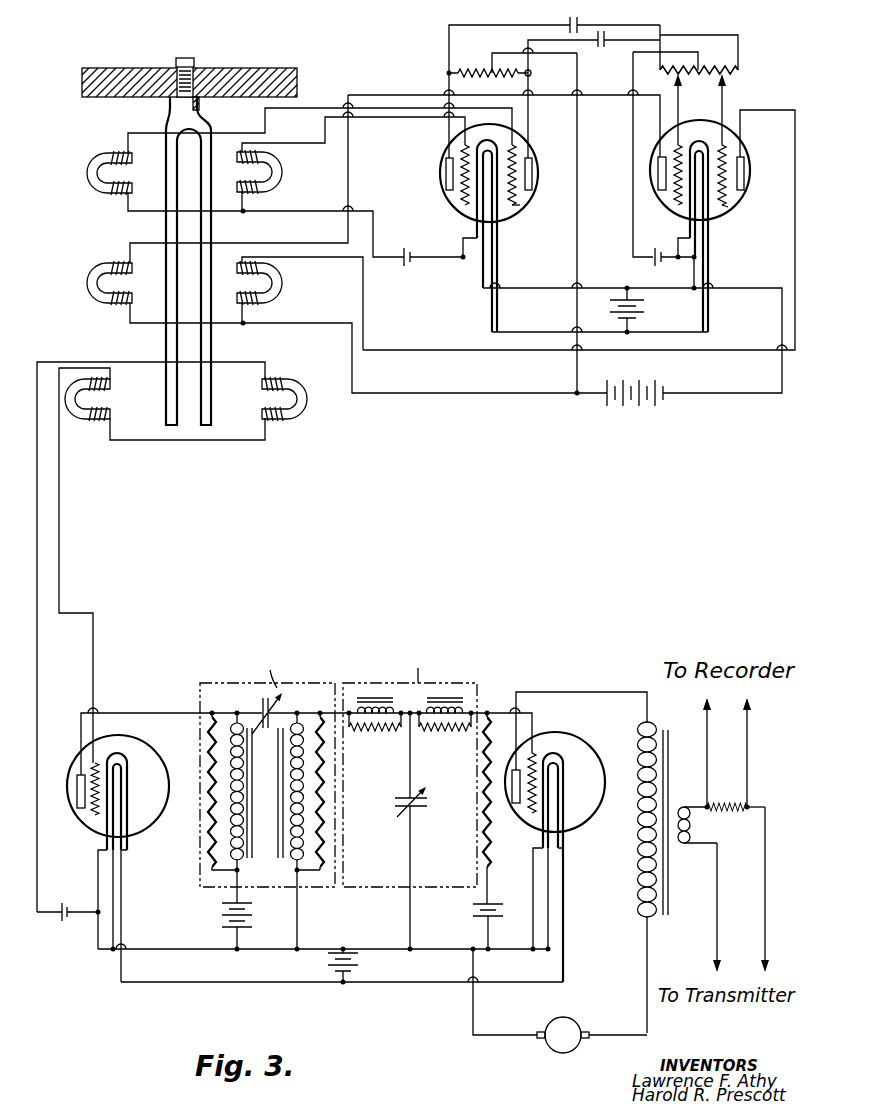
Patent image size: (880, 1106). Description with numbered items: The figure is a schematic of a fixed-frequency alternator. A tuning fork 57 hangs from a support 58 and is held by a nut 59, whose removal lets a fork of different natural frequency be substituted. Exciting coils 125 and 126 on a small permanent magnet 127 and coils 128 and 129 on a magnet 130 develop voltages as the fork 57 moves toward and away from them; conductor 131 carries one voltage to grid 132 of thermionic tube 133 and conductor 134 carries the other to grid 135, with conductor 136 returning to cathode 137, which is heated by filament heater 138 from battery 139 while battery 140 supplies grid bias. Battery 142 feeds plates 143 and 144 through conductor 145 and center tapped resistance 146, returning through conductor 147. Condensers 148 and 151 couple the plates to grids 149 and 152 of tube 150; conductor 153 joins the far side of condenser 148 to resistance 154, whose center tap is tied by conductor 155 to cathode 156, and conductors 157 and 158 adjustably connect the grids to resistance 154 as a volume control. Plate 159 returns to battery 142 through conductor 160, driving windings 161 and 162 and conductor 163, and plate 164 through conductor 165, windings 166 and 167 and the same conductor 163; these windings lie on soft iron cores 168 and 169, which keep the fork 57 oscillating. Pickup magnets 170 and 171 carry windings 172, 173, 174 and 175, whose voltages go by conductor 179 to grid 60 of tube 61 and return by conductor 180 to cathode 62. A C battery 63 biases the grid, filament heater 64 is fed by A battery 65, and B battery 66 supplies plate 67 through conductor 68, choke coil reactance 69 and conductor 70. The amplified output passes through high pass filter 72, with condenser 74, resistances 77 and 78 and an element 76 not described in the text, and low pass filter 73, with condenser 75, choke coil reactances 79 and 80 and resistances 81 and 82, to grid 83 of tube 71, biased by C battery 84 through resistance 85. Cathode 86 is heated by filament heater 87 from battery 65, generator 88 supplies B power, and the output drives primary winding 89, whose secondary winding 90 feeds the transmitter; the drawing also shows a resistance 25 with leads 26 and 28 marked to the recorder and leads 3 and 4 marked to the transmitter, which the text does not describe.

The lead to transmitter 3 is at (718, 910).
The lead to transmitter 4 is at (766, 902).
The potentiometer resistor 25 is at (717, 803).
The lead to recorder 26 is at (748, 763).
The lead to recorder 28 is at (707, 757).
The tuning fork 57 is at (212, 347).
The support 58 is at (247, 68).
The nut 59 is at (188, 62).
The grid 60 is at (97, 767).
The thermionic tube 61 is at (150, 752).
The cathode 62 is at (107, 826).
The C battery 63 is at (64, 926).
The filament heater 64 is at (128, 798).
The A battery 65 is at (370, 963).
The B battery 66 is at (253, 915).
The plate 67 is at (77, 800).
The conductor 68 is at (240, 873).
The choke coil reactance 69 is at (243, 813).
The conductor 70 is at (130, 713).
The thermionic tube 71 is at (577, 737).
The high pass filter 72 is at (304, 684).
The low pass filter 73 is at (472, 684).
The condenser 74 is at (283, 703).
The condenser 75 is at (427, 795).
The inductance 76 is at (323, 832).
The resistance 77 is at (208, 833).
The resistance 78 is at (304, 796).
The choke coil reactance 79 is at (373, 704).
The choke coil reactance 80 is at (445, 704).
The resistance 81 is at (374, 730).
The resistance 82 is at (435, 730).
The grid 83 is at (537, 760).
The C battery 84 is at (494, 908).
The resistance 85 is at (490, 850).
The cathode 86 is at (540, 817).
The filament heater 87 is at (562, 795).
The generator 88 is at (580, 1027).
The primary winding 89 is at (639, 872).
The secondary winding 90 is at (690, 827).
The coil 125 is at (117, 152).
The coil 126 is at (120, 196).
The permanent magnet 127 is at (98, 194).
The coil 128 is at (263, 157).
The coil 129 is at (265, 190).
The permanent magnet 130 is at (281, 172).
The conductor 131 is at (318, 107).
The grid 132 is at (520, 205).
The thermionic tube 133 is at (520, 154).
The conductor 134 is at (399, 117).
The grid 135 is at (466, 200).
The conductor 136 is at (306, 212).
The cathode 137 is at (473, 213).
The filament heater 138 is at (504, 215).
The battery 139 is at (645, 310).
The battery 140 is at (406, 270).
The battery 142 is at (666, 404).
The plate 143 is at (446, 180).
The plate 144 is at (533, 177).
The conductor 145 is at (578, 243).
The center tapped resistance 146 is at (463, 70).
The conductor 147 is at (740, 288).
The condenser 148 is at (579, 25).
The grid 149 is at (678, 148).
The thermionic tube 150 is at (740, 148).
The condenser 151 is at (602, 47).
The grid 152 is at (728, 203).
The conductor 153 is at (660, 25).
The resistance 154 is at (705, 70).
The conductor 155 is at (633, 157).
The cathode 156 is at (660, 248).
The conductor 157 is at (680, 100).
The conductor 158 is at (724, 100).
The plate 159 is at (662, 192).
The conductor 160 is at (238, 243).
The winding 161 is at (118, 263).
The winding 162 is at (128, 304).
The conductor 163 is at (473, 393).
The plate 164 is at (745, 172).
The conductor 165 is at (445, 350).
The winding 166 is at (262, 266).
The winding 167 is at (265, 302).
The soft iron electromagnet core 168 is at (96, 305).
The soft iron electromagnet core 169 is at (281, 283).
The permanent magnet 170 is at (80, 415).
The permanent magnet 171 is at (307, 400).
The winding 172 is at (113, 390).
The winding 173 is at (112, 418).
The winding 174 is at (273, 380).
The winding 175 is at (290, 420).
The conductor 179 is at (93, 653).
The conductor 180 is at (38, 652).